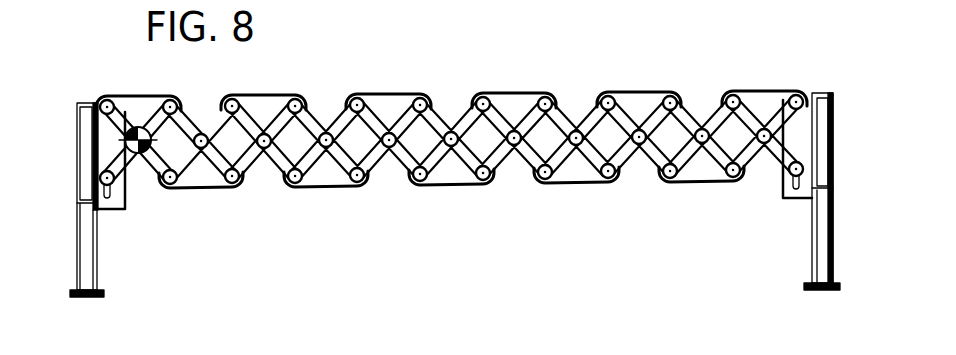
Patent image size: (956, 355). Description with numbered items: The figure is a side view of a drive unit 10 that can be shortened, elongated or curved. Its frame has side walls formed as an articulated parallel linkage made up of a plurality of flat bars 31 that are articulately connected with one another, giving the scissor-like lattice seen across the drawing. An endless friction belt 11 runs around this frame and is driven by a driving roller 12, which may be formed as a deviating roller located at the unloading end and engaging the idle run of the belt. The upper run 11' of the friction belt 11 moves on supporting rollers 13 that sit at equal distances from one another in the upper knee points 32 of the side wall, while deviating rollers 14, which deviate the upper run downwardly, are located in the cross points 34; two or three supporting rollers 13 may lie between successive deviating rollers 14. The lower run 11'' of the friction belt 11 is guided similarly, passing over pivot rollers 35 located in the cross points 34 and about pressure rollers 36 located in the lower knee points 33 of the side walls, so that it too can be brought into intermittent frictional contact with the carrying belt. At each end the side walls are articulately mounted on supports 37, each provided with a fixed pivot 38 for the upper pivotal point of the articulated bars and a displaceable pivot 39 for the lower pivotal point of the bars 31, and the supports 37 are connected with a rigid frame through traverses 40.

The drive unit 10 is at (232, 278).
The endless friction belt 11 is at (764, 75).
The upper run of the friction belt 11' is at (388, 79).
The lower run of the friction belt 11'' is at (332, 203).
The driving roller 12 is at (140, 154).
The supporting roller 13 is at (479, 98).
The deviating roller 14 is at (328, 132).
The flat bar 31 is at (620, 112).
The upper knee point 32 is at (603, 97).
The lower knee point 33 is at (605, 177).
The cross point 34 is at (571, 131).
The pivot roller 35 is at (262, 184).
The pressure roller 36 is at (296, 184).
The support 37 is at (820, 250).
The fixed pivot 38 is at (104, 100).
The displaceable pivot 39 is at (125, 208).
The traverse 40 is at (815, 92).